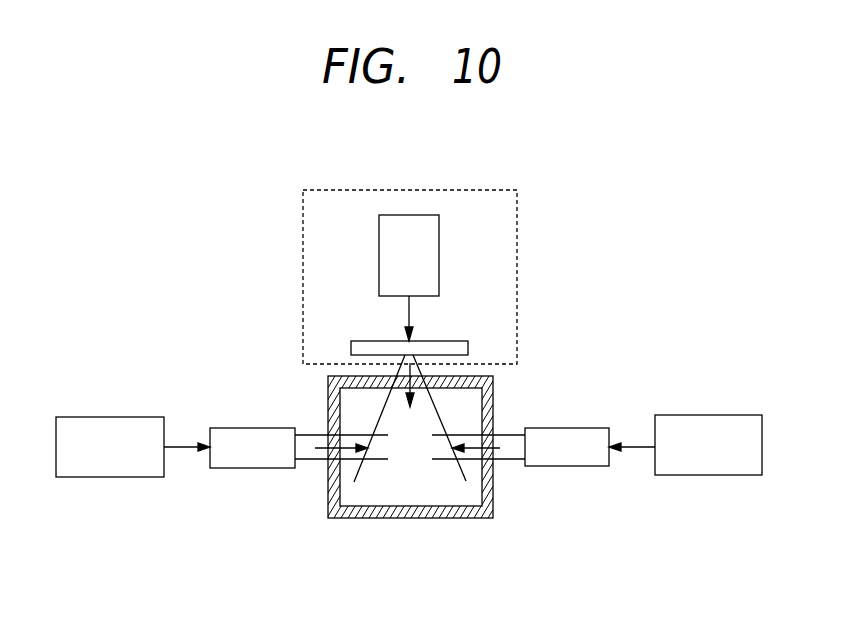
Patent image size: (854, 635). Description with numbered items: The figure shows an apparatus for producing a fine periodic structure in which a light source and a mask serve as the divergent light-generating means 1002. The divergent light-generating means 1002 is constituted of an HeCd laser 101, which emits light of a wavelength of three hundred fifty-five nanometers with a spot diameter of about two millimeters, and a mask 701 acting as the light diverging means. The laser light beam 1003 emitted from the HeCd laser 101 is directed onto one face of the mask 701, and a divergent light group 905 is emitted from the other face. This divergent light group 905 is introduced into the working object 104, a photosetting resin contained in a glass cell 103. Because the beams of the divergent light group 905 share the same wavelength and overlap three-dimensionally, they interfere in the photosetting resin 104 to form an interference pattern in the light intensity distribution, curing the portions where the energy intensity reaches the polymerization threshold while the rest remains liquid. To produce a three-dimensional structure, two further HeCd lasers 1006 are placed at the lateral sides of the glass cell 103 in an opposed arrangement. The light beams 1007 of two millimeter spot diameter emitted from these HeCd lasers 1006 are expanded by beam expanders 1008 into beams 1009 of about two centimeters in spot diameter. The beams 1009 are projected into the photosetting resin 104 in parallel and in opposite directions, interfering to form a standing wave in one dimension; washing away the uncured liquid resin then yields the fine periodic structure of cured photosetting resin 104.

The HeCd laser 101 is at (396, 225).
The divergent light-generating means 1002 is at (455, 190).
The laser light beam 1003 is at (413, 313).
The mask 701 is at (352, 348).
The divergent light group 905 is at (427, 405).
The glass cell 103 is at (370, 518).
The working object 104 is at (432, 490).
The HeCd lasers 1006 is at (79, 417).
The light beams 1007 is at (187, 440).
The beam expanders 1008 is at (270, 428).
The beams 1009 is at (323, 449).